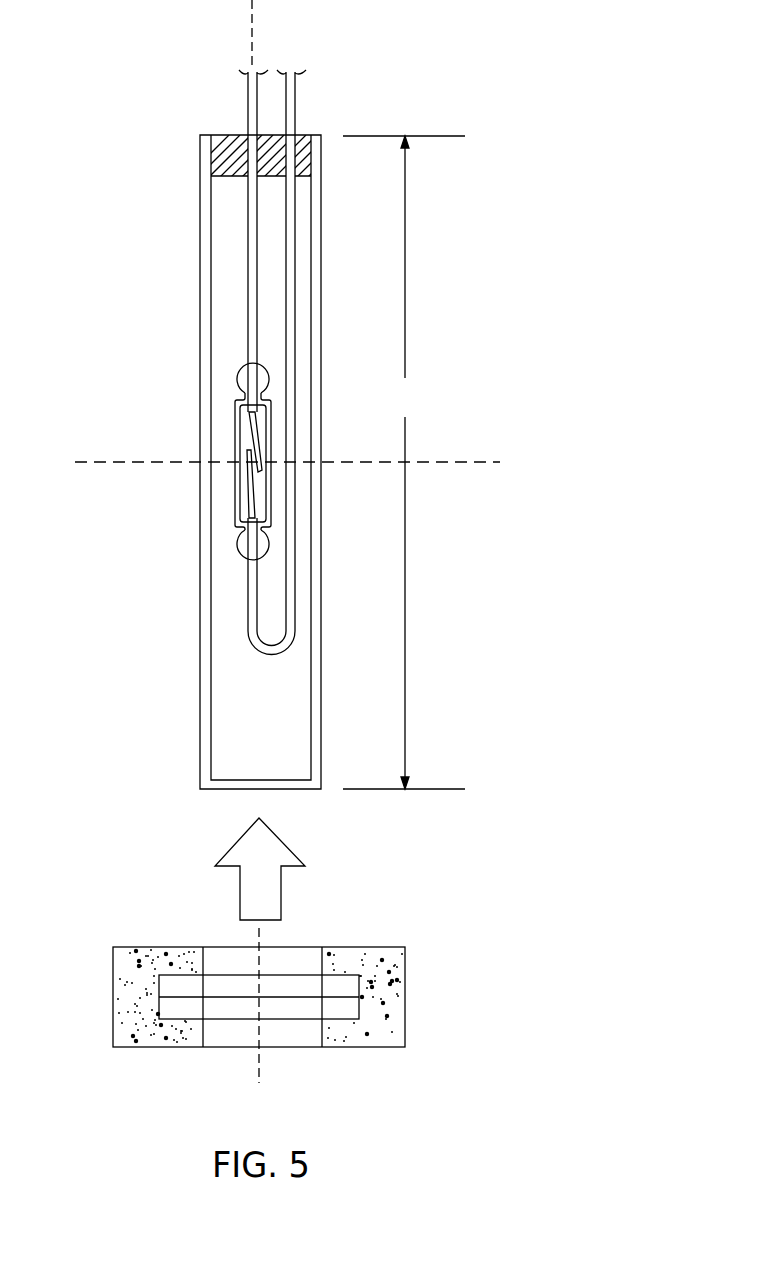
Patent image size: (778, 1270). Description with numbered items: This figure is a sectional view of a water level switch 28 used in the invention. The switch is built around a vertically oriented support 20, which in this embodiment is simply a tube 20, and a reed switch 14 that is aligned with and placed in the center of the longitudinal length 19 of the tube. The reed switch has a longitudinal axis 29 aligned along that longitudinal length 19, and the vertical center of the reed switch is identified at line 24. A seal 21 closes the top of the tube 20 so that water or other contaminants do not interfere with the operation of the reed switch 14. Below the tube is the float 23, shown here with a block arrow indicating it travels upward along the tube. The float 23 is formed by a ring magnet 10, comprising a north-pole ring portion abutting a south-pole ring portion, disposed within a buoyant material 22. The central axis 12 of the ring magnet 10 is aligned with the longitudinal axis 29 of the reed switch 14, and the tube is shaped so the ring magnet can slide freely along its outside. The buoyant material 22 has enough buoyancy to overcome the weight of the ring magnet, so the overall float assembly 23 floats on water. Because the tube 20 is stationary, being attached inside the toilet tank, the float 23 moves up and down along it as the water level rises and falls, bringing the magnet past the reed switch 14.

The ring magnet 10 is at (357, 975).
The central axis 12 is at (257, 1063).
The reed switch 14 is at (237, 423).
The longitudinal length 19 is at (404, 462).
The vertically oriented support 20 is at (318, 297).
The seal 21 is at (302, 135).
The buoyant material 22 is at (358, 1047).
The float 23 is at (333, 1003).
The vertical center line 24 is at (460, 462).
The water level switch 28 is at (225, 394).
The longitudinal axis 29 is at (253, 32).